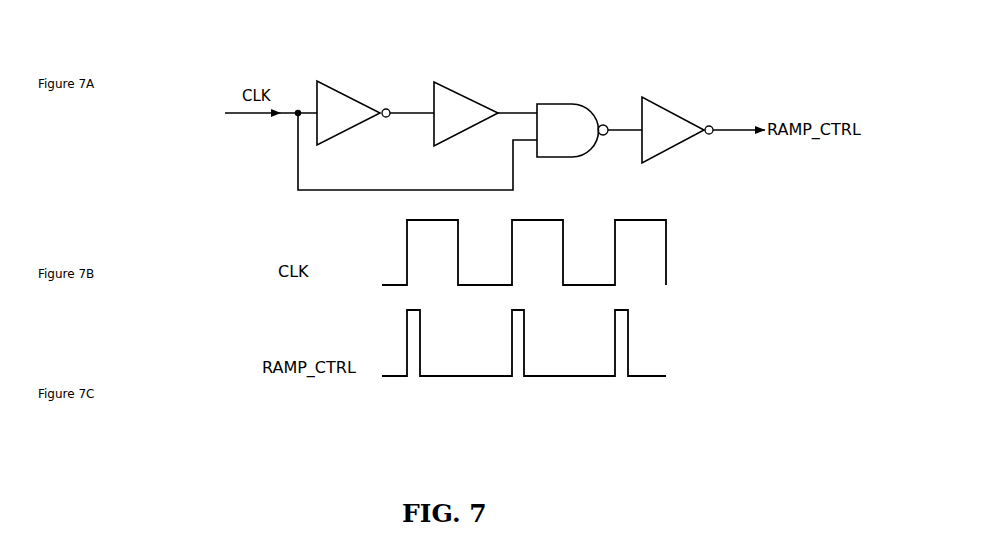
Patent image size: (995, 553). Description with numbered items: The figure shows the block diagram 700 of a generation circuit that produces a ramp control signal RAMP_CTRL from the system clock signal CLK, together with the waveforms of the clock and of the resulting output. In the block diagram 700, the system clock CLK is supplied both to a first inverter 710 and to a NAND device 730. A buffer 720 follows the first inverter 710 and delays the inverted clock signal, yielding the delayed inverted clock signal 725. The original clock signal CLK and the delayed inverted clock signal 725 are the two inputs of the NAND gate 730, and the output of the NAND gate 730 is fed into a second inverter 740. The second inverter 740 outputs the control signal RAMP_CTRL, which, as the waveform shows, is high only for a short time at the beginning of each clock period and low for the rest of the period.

In FIG. 7, the block diagram 700 is at (169, 19).
In FIG. 7A, the first inverter 710 is at (353, 113).
In FIG. 7A, the buffer 720 is at (466, 114).
In FIG. 7A, the delayed inverted clock signal 725 is at (524, 108).
In FIG. 7A, the NAND device 730 is at (572, 130).
In FIG. 7A, the second inverter 740 is at (677, 130).